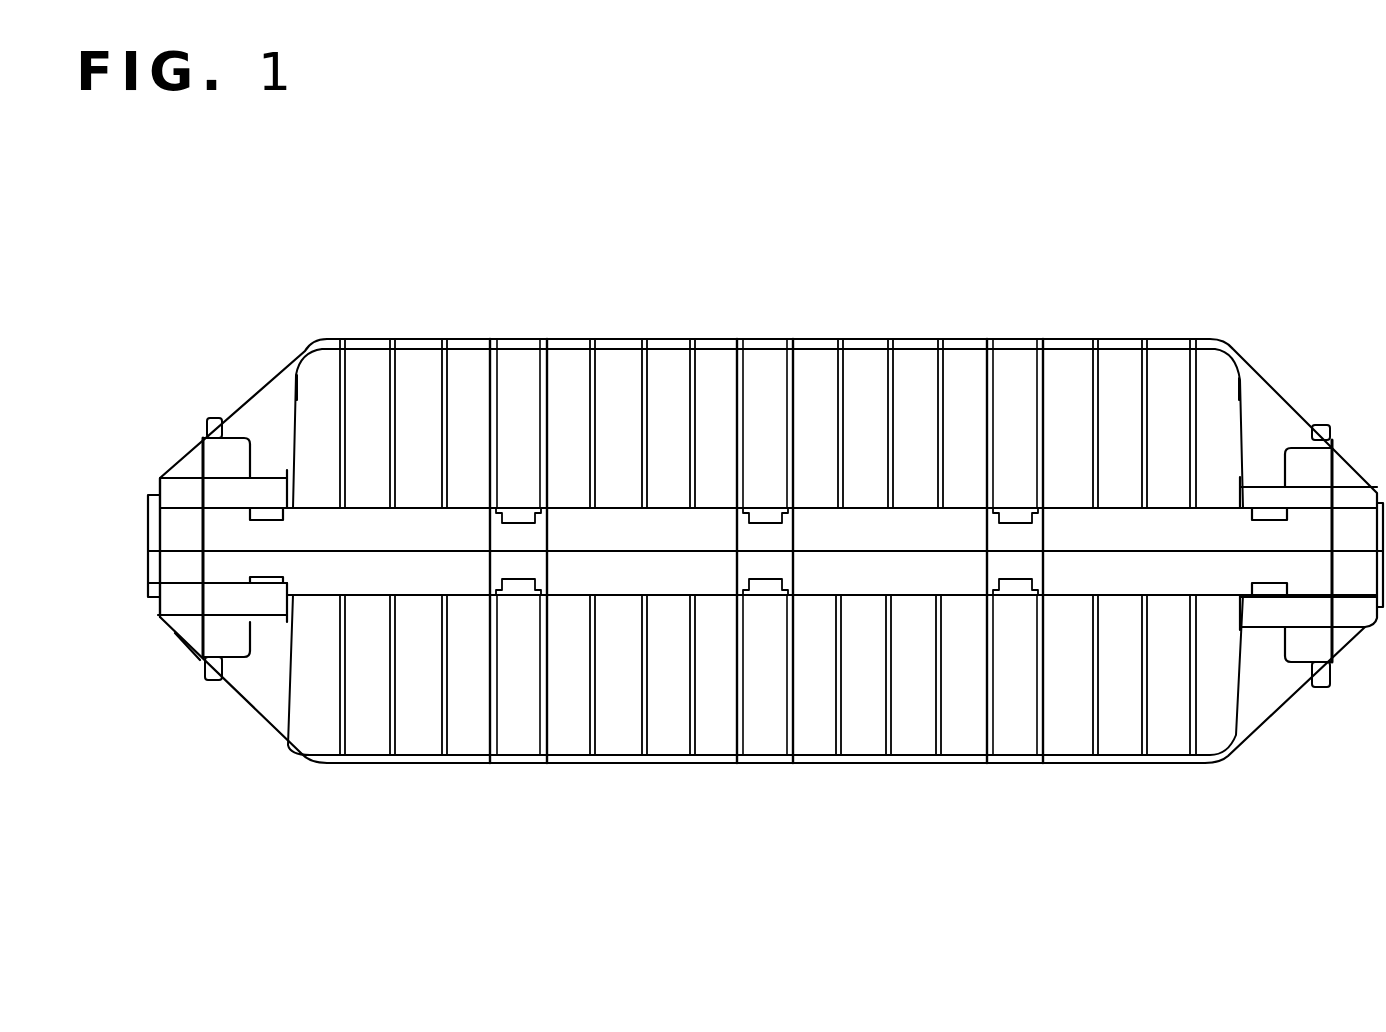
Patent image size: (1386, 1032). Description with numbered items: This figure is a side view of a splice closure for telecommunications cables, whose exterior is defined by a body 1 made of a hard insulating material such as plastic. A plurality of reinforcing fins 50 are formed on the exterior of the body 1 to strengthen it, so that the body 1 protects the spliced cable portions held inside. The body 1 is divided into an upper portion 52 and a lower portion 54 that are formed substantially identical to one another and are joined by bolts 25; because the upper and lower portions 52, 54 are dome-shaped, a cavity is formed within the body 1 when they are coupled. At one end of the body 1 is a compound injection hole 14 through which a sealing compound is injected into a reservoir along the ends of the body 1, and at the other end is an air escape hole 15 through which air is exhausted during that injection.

The body 1 is at (612, 333).
The compound injection hole 14 is at (218, 418).
The air escape hole 15 is at (1322, 425).
The bolts 25 is at (766, 586).
The reinforcing fins 50 is at (795, 393).
The upper portion 52 is at (1005, 340).
The lower portion 54 is at (1022, 763).